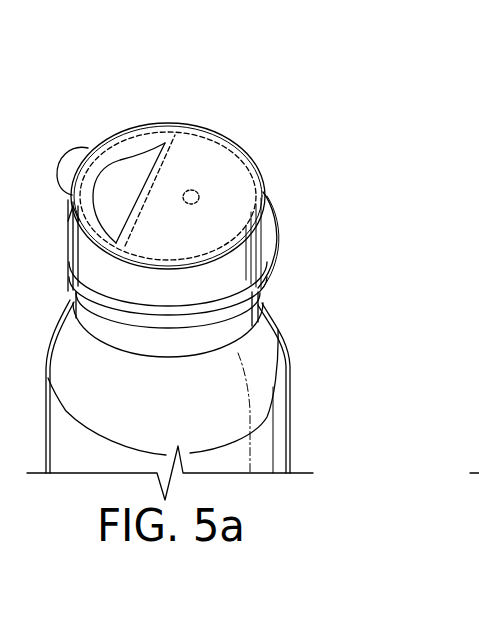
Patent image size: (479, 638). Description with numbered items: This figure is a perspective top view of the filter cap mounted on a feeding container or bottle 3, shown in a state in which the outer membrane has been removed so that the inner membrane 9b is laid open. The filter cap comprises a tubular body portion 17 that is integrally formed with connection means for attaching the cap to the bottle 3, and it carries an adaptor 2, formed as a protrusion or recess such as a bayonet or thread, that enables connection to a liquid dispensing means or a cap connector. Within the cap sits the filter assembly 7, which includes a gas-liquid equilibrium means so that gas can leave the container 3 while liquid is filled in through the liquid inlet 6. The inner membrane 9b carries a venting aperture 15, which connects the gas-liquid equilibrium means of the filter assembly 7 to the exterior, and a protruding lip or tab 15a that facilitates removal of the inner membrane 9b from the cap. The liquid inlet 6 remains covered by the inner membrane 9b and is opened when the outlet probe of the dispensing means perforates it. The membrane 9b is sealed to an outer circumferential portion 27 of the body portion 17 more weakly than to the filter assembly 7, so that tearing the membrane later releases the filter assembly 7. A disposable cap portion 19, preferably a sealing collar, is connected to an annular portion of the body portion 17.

The adaptor 2 is at (264, 270).
The feeding container or bottle 3 is at (289, 400).
The liquid inlet 6 is at (199, 192).
The filter assembly 7 is at (201, 150).
The inner membrane 9b is at (159, 138).
The venting aperture 15 is at (126, 170).
The protruding lip or tab 15a is at (73, 160).
The tubular body portion 17 is at (250, 252).
The disposable cap portion 19 is at (228, 210).
The outer circumferential portion 27 is at (76, 214).